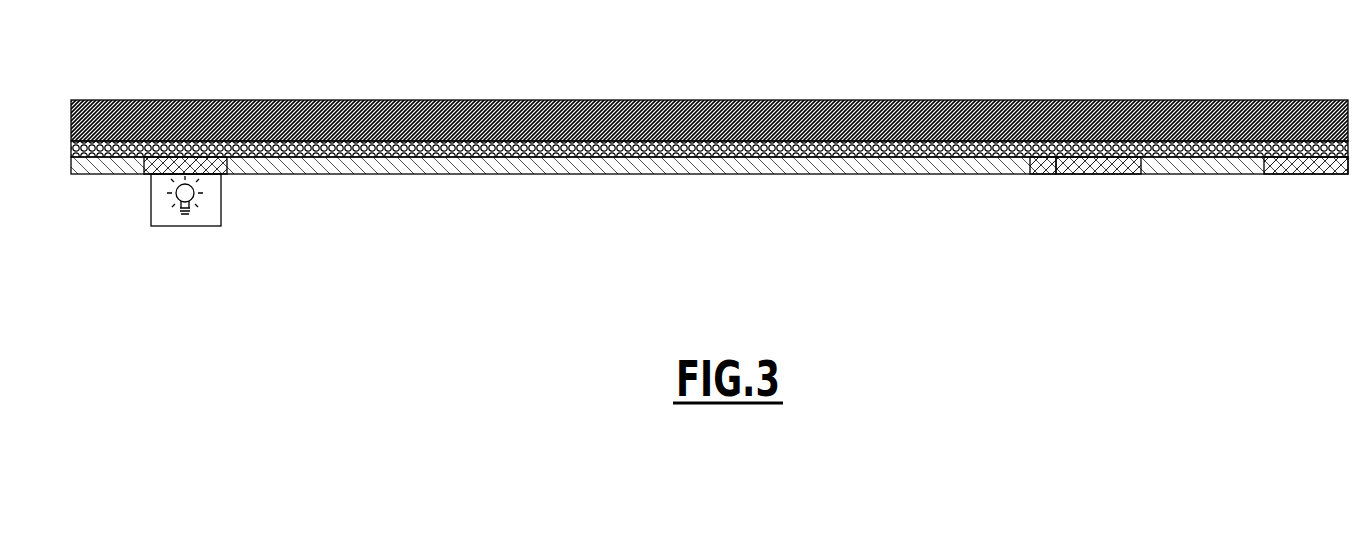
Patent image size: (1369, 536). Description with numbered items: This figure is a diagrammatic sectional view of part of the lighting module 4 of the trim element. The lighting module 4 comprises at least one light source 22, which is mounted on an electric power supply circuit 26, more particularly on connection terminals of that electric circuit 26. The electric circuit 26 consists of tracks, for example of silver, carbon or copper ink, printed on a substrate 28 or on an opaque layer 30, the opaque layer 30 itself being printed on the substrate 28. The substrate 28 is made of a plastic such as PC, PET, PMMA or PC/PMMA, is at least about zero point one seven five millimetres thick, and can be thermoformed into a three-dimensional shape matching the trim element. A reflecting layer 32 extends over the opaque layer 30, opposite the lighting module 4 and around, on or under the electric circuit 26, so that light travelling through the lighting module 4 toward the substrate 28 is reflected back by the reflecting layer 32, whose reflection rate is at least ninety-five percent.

The lighting module 4 is at (709, 207).
The light source 22 is at (179, 189).
The electric power supply circuit 26 is at (1090, 153).
The substrate 28 is at (849, 93).
The opaque layer 30 is at (1022, 150).
The reflecting layer 32 is at (690, 155).